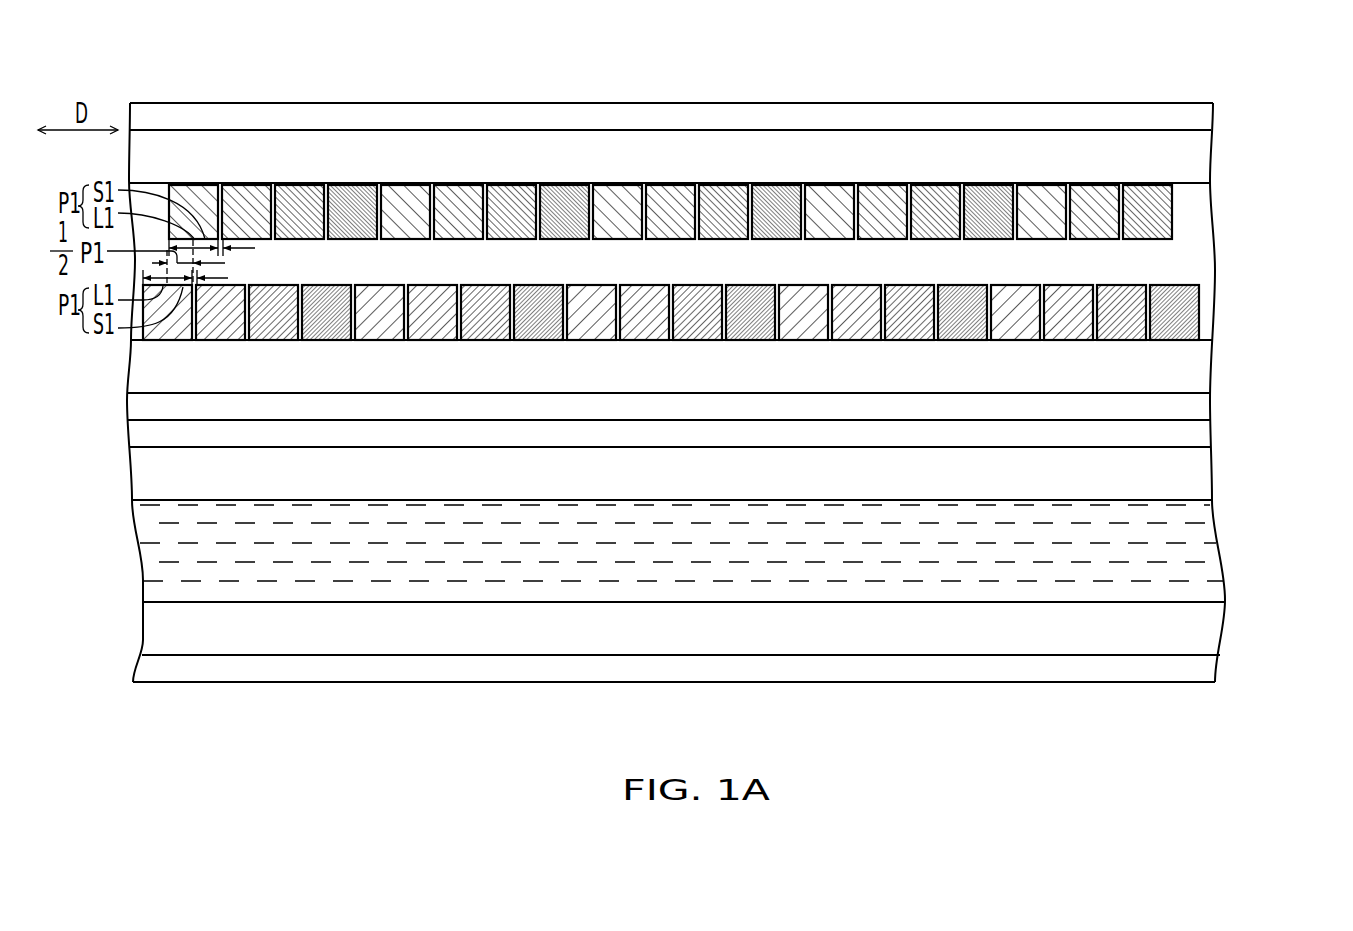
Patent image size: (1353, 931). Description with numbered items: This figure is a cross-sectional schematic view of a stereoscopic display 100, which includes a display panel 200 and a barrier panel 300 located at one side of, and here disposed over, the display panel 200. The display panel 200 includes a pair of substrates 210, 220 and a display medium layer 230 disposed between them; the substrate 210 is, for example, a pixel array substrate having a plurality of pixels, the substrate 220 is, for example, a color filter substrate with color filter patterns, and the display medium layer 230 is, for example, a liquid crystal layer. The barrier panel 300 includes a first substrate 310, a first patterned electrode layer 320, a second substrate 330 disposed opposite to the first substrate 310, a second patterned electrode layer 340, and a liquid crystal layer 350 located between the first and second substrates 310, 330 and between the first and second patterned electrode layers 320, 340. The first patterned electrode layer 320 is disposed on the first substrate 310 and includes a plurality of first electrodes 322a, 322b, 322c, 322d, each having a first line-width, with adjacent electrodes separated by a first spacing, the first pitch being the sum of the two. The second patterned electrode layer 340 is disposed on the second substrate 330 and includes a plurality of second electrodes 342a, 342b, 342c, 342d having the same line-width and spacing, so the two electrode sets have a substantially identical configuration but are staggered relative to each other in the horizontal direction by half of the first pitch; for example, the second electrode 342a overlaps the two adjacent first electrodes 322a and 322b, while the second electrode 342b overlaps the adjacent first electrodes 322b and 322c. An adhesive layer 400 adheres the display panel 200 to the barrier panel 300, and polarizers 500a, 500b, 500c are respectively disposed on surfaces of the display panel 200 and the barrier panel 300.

The stereoscopic display 100 is at (1282, 747).
The display panel 200 is at (1284, 447).
The substrate 210 is at (1197, 633).
The substrate 220 is at (1197, 475).
The display medium layer 230 is at (1229, 502).
The barrier panel 300 is at (1284, 127).
The first substrate 310 is at (1197, 375).
The first patterned electrode layer 320 is at (665, 372).
The first electrode 322a is at (160, 342).
The first electrode 322b is at (212, 342).
The first electrode 322c is at (270, 342).
The first electrode 322d is at (317, 342).
The second substrate 330 is at (1197, 155).
The second patterned electrode layer 340 is at (725, 148).
The second electrode 342a is at (192, 197).
The second electrode 342b is at (245, 197).
The second electrode 342c is at (300, 197).
The second electrode 342d is at (355, 197).
The liquid crystal layer 350 is at (1197, 272).
The adhesive layer 400 is at (1197, 408).
The polarizer 500a is at (1197, 672).
The polarizer 500b is at (1197, 437).
The polarizer 500c is at (1197, 117).